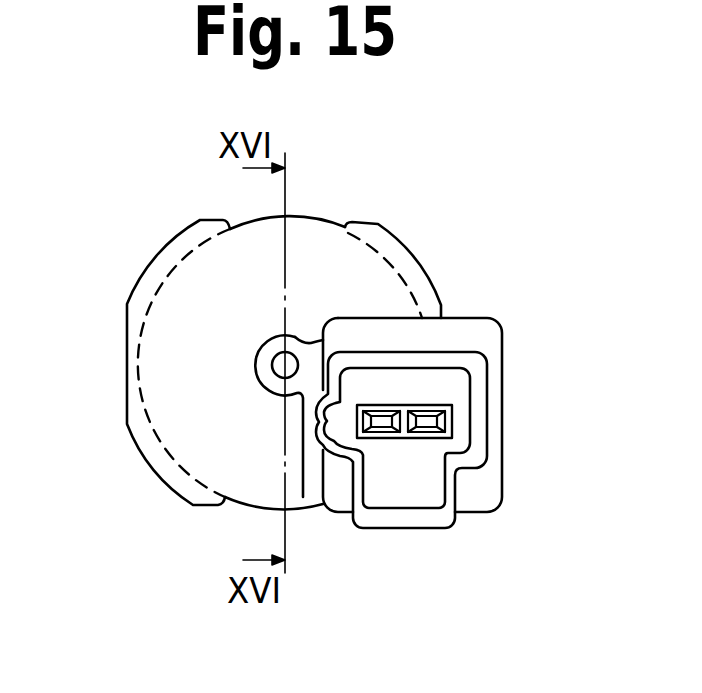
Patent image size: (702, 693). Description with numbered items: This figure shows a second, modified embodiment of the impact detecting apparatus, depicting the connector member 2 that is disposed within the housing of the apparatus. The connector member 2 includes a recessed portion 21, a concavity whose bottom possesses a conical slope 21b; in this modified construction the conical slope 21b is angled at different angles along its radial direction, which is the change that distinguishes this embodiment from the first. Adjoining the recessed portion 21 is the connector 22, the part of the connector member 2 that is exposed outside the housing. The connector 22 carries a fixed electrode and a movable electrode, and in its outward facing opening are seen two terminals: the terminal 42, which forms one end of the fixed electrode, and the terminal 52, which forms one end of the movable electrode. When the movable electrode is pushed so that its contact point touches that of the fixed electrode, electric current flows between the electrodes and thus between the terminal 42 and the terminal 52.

The connector member 2 is at (425, 265).
The recessed portion 21 is at (202, 288).
The conical slope 21b is at (187, 400).
The connector 22 is at (475, 488).
The terminal 42 is at (382, 432).
The terminal 52 is at (452, 423).